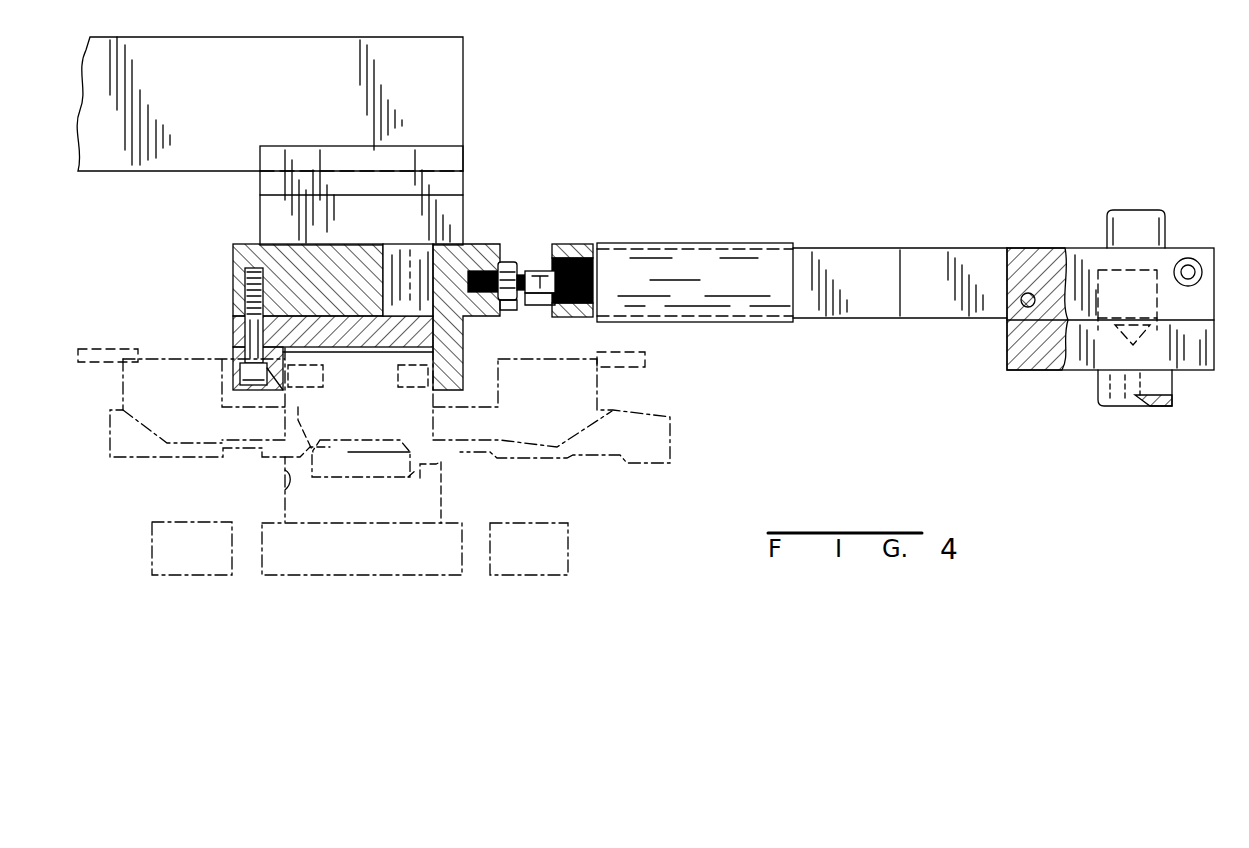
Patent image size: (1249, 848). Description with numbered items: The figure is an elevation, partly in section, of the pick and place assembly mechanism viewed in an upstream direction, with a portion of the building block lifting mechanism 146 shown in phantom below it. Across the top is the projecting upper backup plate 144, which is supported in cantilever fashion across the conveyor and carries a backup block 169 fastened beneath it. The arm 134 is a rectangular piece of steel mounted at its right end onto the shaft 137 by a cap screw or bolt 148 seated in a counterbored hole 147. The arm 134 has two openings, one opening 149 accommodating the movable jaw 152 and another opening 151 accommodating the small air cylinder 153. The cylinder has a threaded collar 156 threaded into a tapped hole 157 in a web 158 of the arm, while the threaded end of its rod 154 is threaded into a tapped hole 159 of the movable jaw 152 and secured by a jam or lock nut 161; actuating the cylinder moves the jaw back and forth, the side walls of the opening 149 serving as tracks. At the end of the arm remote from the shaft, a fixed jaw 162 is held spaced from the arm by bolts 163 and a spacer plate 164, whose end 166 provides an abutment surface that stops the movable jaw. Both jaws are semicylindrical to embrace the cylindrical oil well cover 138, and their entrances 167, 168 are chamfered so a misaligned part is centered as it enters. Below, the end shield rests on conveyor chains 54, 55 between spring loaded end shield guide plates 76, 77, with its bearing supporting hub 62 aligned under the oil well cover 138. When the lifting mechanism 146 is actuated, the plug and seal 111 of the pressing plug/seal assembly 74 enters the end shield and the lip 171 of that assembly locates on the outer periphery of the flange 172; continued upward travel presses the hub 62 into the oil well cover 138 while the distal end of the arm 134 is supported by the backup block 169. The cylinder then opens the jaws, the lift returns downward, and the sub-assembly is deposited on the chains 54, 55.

The upper backup plate 144 is at (454, 63).
The backup block 169 is at (454, 207).
The bolts 163 is at (232, 276).
The spacer plate 164 is at (232, 330).
The fixed jaw 162 is at (233, 366).
The movable jaw 152 is at (478, 248).
The opening 149 is at (537, 337).
The end of spacer plate 166 is at (406, 350).
The threaded collar 156 is at (598, 273).
The jam or lock nut 161 is at (510, 262).
The rod 154 is at (536, 272).
The tapped hole 157 is at (576, 246).
The air cylinder 153 is at (700, 250).
The tapped hole 159 is at (515, 314).
The web 158 is at (592, 318).
The arm 134 is at (893, 248).
The opening 151 is at (912, 320).
The counterbored hole 147 is at (1163, 270).
The cap screw or bolt 148 is at (1140, 210).
The shaft 137 is at (1176, 390).
The end shield guide plate 77 is at (622, 354).
The end shield guide plate 76 is at (108, 348).
The bearing supporting hub 62 is at (296, 415).
The plug and seal 111 is at (346, 458).
The oil well cover 138 is at (434, 396).
The entrance of fixed jaw 167 is at (284, 388).
The entrance of movable jaw 168 is at (440, 392).
The lip 171 is at (280, 468).
The flange 172 is at (286, 490).
The pressing plug/seal assembly 74 is at (428, 503).
The lifting mechanism 146 is at (468, 528).
The conveyor chain 55 is at (162, 522).
The conveyor chain 54 is at (570, 536).